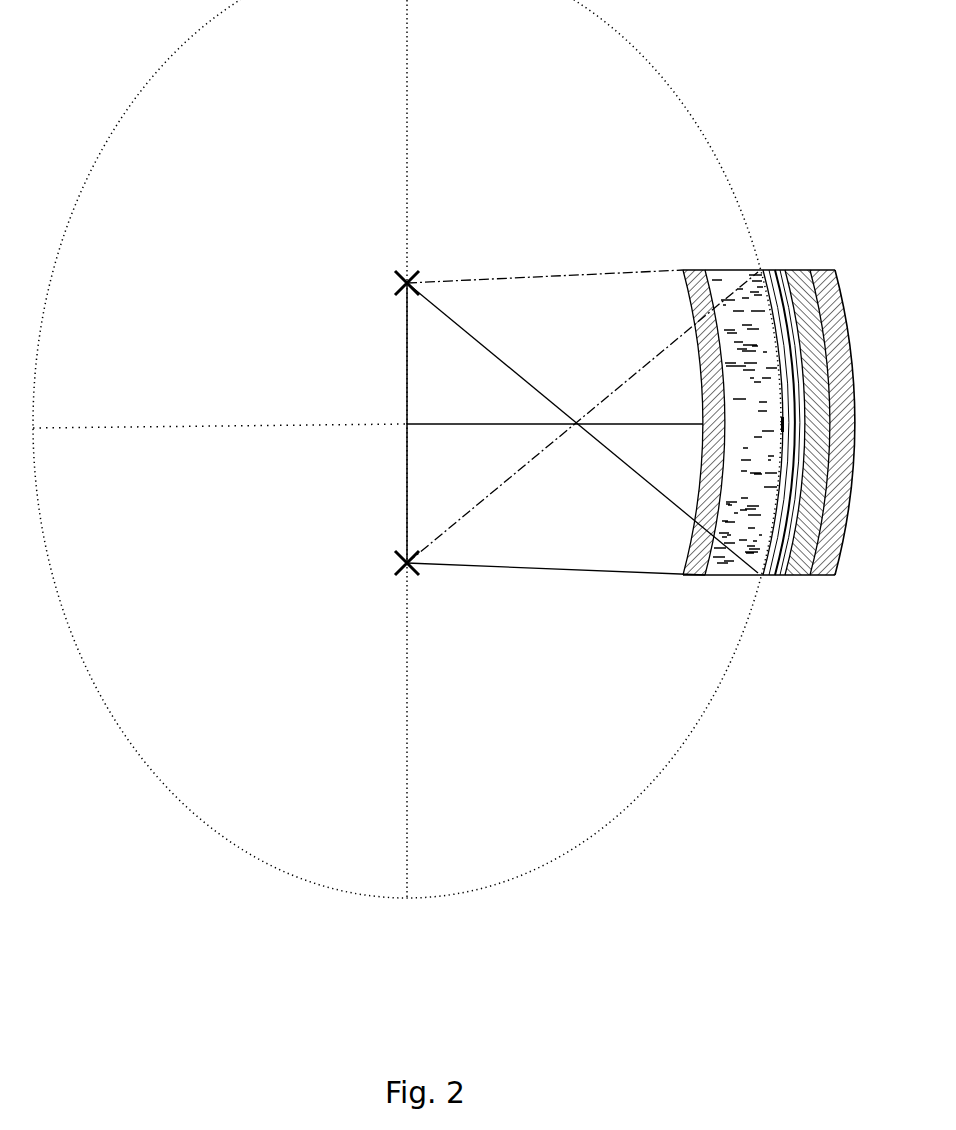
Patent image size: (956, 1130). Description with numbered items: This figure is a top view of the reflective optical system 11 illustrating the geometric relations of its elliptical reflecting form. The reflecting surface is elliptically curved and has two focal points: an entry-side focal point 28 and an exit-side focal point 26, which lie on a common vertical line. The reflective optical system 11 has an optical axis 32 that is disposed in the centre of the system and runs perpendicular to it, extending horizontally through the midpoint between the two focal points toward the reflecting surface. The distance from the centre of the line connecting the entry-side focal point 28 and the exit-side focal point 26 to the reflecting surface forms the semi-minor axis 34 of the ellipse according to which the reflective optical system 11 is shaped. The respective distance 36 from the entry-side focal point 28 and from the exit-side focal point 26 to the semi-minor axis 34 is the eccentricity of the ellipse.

The reflective optical system 11 is at (769, 384).
The exit-side focal point 26 is at (396, 283).
The entry-side focal point 28 is at (398, 562).
The optical axis 32 is at (275, 422).
The semi-minor axis 34 is at (459, 422).
The distance 36 is at (406, 458).